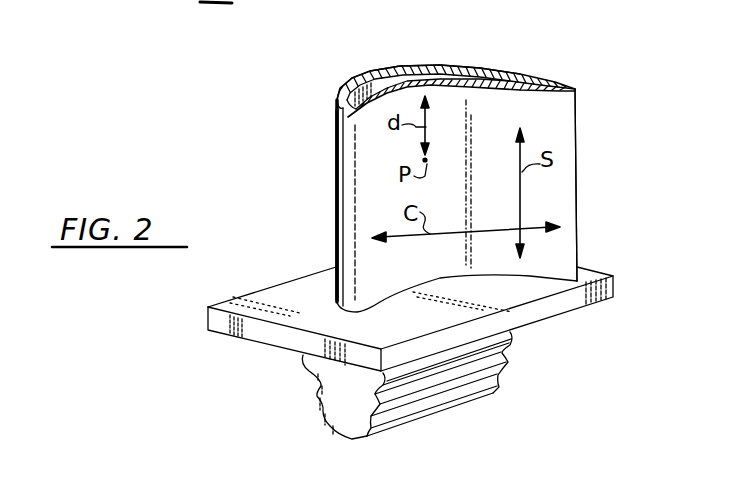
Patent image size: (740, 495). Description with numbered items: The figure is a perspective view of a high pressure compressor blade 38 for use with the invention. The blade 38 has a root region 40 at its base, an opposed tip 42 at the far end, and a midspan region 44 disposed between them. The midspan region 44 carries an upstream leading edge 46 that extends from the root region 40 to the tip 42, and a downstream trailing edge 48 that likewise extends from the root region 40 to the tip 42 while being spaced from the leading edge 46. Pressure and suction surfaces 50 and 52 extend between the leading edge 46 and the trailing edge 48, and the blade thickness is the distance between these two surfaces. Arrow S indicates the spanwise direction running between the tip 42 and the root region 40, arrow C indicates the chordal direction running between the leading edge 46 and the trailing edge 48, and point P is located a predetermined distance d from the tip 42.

The blade 38 is at (533, 49).
The root region 40 is at (317, 391).
The tip 42 is at (387, 67).
The midspan region 44 is at (335, 174).
The leading edge 46 is at (335, 125).
The trailing edge 48 is at (578, 180).
The pressure surface 50 is at (445, 88).
The suction surface 52 is at (418, 66).